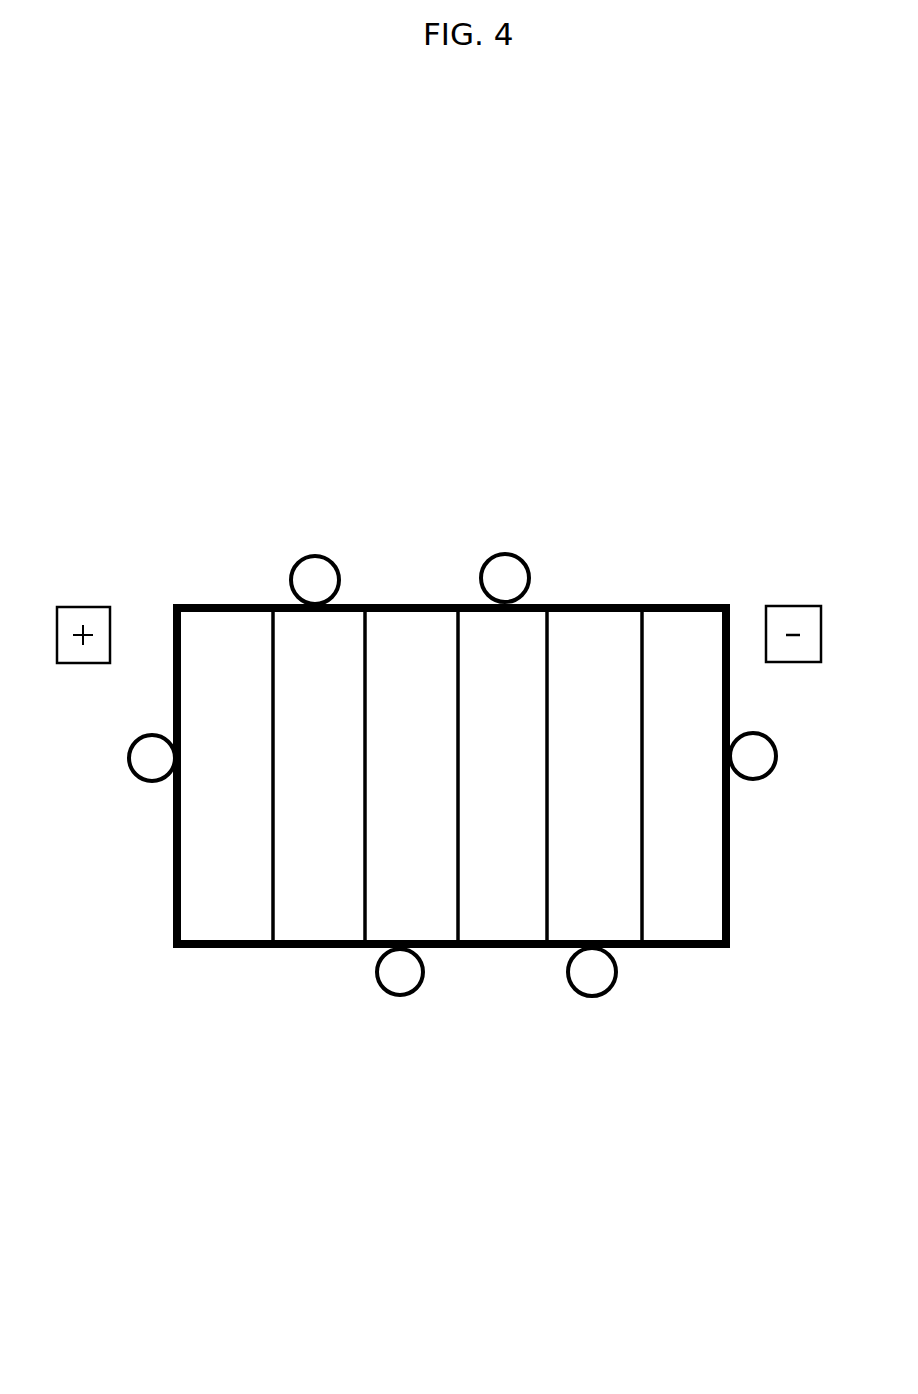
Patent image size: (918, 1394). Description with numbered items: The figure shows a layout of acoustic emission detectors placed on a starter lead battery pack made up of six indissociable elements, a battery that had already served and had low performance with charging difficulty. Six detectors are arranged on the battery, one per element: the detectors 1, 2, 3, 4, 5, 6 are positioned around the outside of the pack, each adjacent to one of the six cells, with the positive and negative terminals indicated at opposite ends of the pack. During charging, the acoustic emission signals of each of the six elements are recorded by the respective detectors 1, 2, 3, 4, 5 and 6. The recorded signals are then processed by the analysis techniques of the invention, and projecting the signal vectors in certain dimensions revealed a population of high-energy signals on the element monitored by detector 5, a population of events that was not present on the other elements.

The acoustic emission detector 1 is at (152, 826).
The acoustic emission detector 2 is at (313, 515).
The acoustic emission detector 3 is at (397, 1023).
The acoustic emission detector 4 is at (503, 515).
The acoustic emission detector 5 is at (588, 1023).
The acoustic emission detector 6 is at (751, 815).